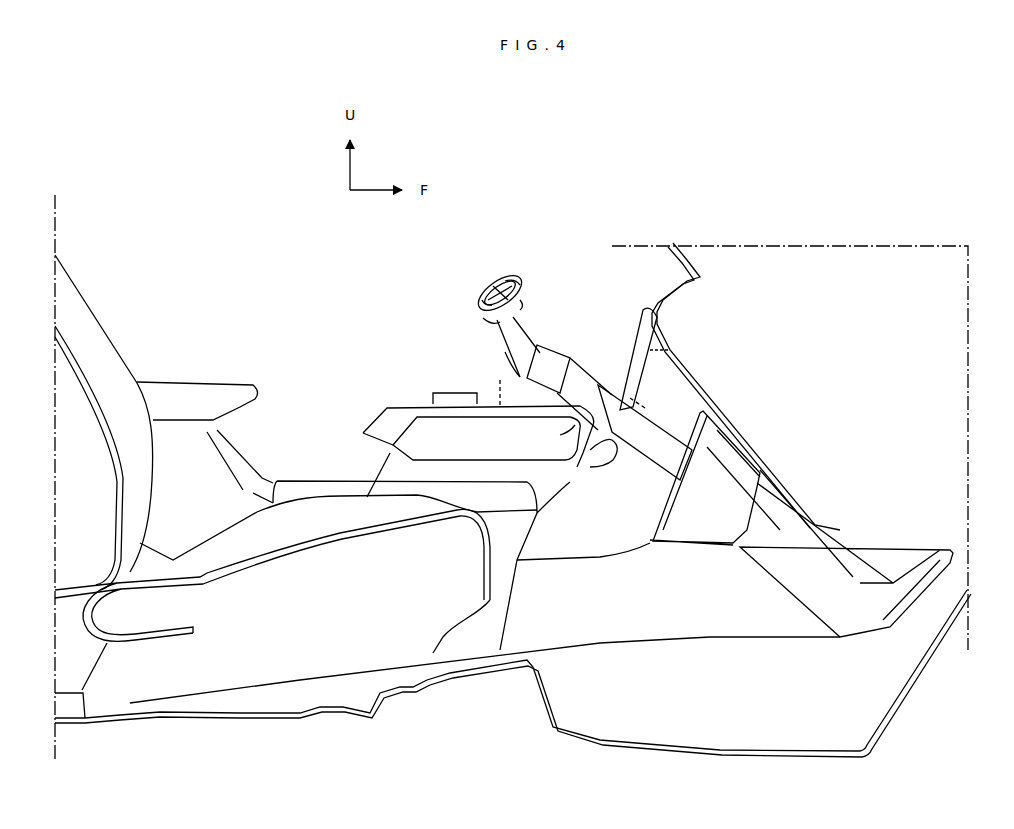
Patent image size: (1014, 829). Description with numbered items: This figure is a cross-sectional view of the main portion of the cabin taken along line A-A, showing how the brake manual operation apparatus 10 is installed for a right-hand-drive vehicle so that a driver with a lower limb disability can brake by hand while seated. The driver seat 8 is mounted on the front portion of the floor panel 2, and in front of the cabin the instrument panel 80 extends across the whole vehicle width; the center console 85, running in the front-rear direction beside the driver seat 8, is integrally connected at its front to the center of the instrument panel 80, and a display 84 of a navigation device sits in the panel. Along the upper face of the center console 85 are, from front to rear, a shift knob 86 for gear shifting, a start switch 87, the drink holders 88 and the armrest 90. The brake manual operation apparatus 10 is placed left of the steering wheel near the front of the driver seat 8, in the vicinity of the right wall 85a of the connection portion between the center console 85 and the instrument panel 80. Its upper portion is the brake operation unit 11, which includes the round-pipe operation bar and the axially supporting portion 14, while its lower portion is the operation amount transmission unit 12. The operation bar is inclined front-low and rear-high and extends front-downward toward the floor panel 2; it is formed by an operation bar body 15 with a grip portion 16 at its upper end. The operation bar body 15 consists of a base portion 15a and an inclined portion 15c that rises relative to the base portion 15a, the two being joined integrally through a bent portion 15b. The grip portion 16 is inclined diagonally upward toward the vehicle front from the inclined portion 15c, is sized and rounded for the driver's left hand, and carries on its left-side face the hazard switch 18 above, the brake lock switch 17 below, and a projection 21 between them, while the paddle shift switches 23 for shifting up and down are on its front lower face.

The floor panel 2 is at (703, 745).
The driver seat 8 is at (93, 309).
The brake manual operation apparatus 10 is at (571, 262).
The brake operation unit 11 is at (630, 466).
The operation amount transmission unit 12 is at (738, 553).
The axially supporting portion 14 is at (650, 428).
The operation bar body 15 is at (588, 374).
The base portion 15a is at (573, 430).
The bent portion 15b is at (500, 407).
The inclined portion 15c is at (507, 353).
The grip portion 16 is at (494, 284).
The brake lock switch 17 is at (484, 319).
The hazard switch 18 is at (515, 281).
The projection 21 is at (485, 300).
The paddle shift switch 23 is at (523, 304).
The instrument panel 80 is at (666, 262).
The display of navigation device 84 is at (645, 308).
The center console 85 is at (396, 372).
The right wall 85a is at (600, 555).
The shift knob 86 is at (553, 347).
The start switch 87 is at (440, 393).
The drink holder 88 is at (290, 474).
The armrest 90 is at (183, 382).